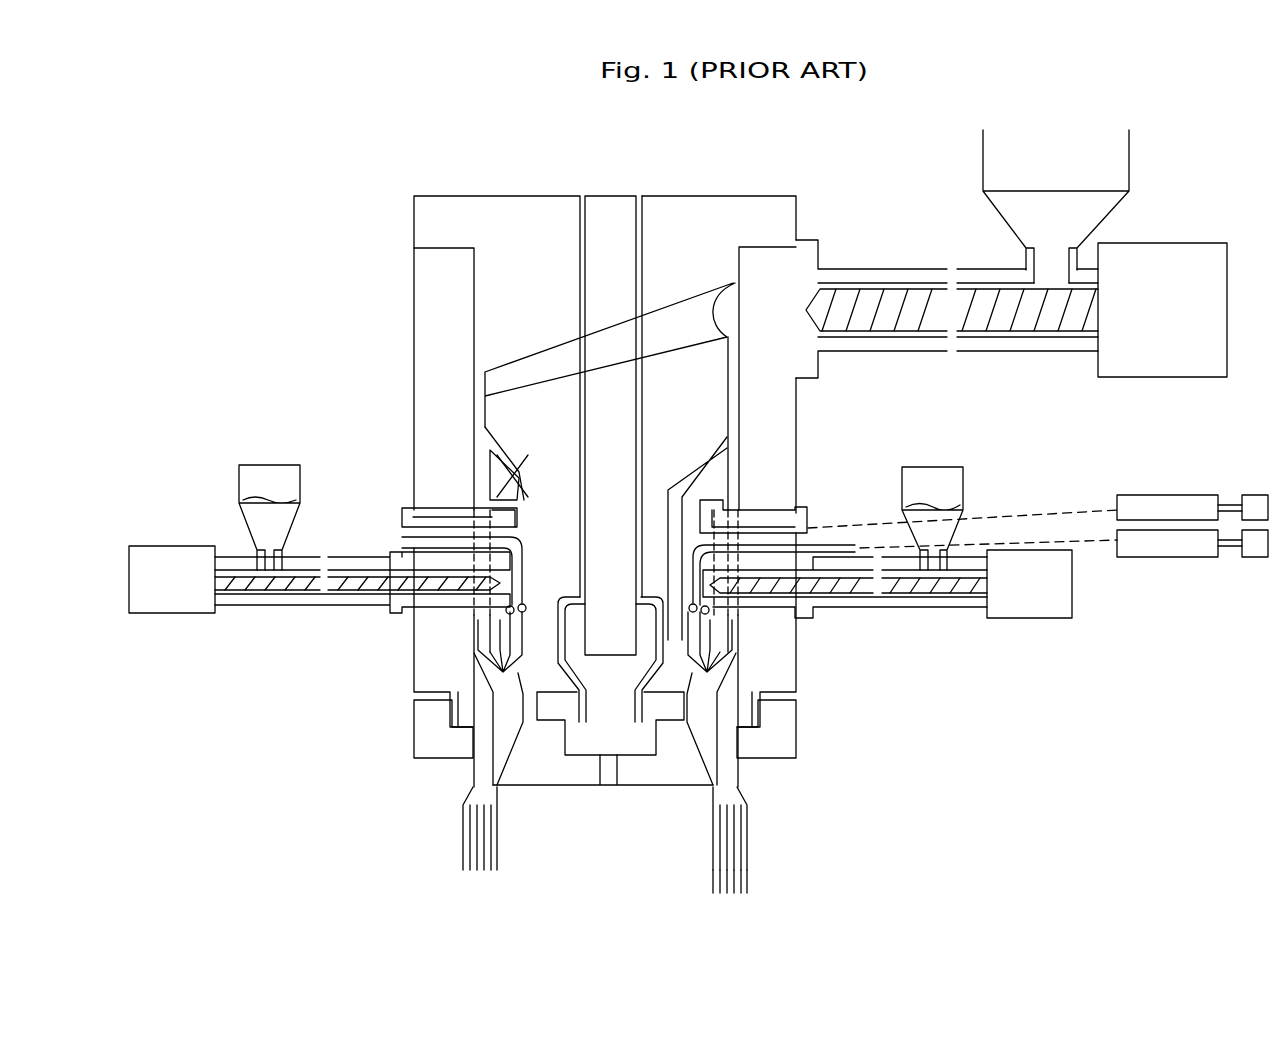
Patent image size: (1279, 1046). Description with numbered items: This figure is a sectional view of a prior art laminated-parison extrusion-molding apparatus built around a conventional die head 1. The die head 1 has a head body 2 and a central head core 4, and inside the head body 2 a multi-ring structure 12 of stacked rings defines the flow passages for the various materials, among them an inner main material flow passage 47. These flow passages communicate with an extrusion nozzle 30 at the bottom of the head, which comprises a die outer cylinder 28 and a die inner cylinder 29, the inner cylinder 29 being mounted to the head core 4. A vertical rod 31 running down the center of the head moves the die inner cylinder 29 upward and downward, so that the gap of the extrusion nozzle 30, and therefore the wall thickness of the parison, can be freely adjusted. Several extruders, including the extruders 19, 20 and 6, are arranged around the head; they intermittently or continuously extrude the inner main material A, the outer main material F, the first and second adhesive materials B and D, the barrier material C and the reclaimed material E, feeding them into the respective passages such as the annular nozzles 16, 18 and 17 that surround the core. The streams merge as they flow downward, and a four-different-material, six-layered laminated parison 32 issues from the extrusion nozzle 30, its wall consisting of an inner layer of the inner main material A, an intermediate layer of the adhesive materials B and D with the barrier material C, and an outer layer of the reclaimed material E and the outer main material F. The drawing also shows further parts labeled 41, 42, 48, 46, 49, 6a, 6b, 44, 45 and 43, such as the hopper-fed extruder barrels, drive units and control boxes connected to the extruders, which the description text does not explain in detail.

The die head 1 is at (392, 215).
The head body 2 is at (423, 328).
The head core 4 is at (478, 283).
The multi-ring structure 12 is at (478, 465).
The inner main material flow passage 47 is at (520, 392).
The vertical rod 31 is at (607, 208).
The extruder 41 is at (896, 258).
The extruder motor 42 is at (1178, 268).
The wedge / insert 48 is at (480, 478).
The valve 46 is at (512, 487).
The mounting bracket 49 is at (485, 518).
The pressure sensor 6b is at (525, 523).
The pressure sensor 6a is at (775, 533).
The annular nozzle 16 is at (567, 582).
The annular nozzle 17 is at (470, 638).
The annular nozzle 18 is at (500, 636).
The die outer cylinder 28 is at (485, 764).
The die inner cylinder 29 is at (536, 777).
The extrusion nozzle 30 is at (720, 763).
The laminated parison 32 is at (758, 830).
The extruder 20 is at (260, 615).
The extruder motor 44 is at (167, 598).
The extruder 6 is at (1165, 500).
The display 45 is at (1255, 500).
The extruder 19 is at (1160, 557).
The display 43 is at (1255, 557).
The inner main material A is at (713, 880).
The first adhesive material B is at (716, 890).
The barrier material C is at (723, 893).
The second adhesive material D is at (732, 893).
The reclaimed material E is at (742, 890).
The outer main material F is at (746, 880).